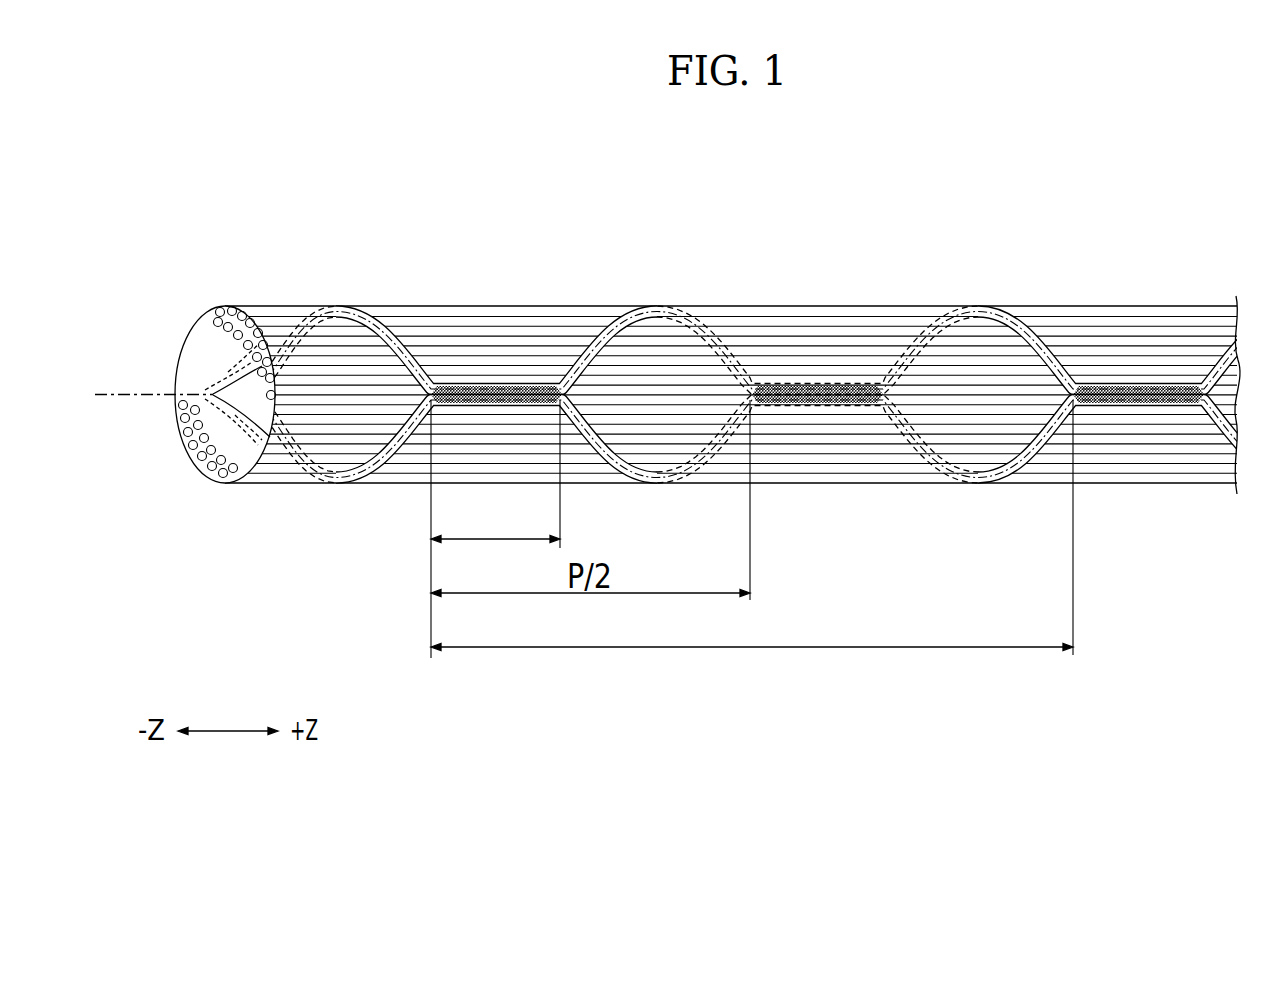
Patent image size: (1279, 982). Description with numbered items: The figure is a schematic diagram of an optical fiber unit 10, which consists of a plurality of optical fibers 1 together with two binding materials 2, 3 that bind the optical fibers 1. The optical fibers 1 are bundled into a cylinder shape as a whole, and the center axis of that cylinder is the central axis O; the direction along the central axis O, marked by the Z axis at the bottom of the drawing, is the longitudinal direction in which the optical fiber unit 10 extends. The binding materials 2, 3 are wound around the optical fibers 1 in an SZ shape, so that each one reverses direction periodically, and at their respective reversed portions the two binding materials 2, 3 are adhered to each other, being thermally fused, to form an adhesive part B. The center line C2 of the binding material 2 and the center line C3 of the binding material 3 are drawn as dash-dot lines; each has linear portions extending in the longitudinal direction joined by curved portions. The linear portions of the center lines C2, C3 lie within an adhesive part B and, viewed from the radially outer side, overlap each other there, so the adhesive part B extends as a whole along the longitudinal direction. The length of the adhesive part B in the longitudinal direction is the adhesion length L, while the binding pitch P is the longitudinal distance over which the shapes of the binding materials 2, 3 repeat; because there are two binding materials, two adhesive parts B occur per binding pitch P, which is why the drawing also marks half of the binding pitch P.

The optical fiber unit 10 is at (503, 272).
The optical fibers 1 is at (212, 483).
The binding material 2 is at (388, 305).
The binding material 3 is at (405, 483).
The center line of the binding material 2 C2 is at (365, 303).
The center line of the binding material 3 C3 is at (365, 483).
The adhesive part B is at (512, 383).
The central axis O is at (113, 392).
The adhesion length L is at (495, 521).
The binding pitch P is at (752, 630).